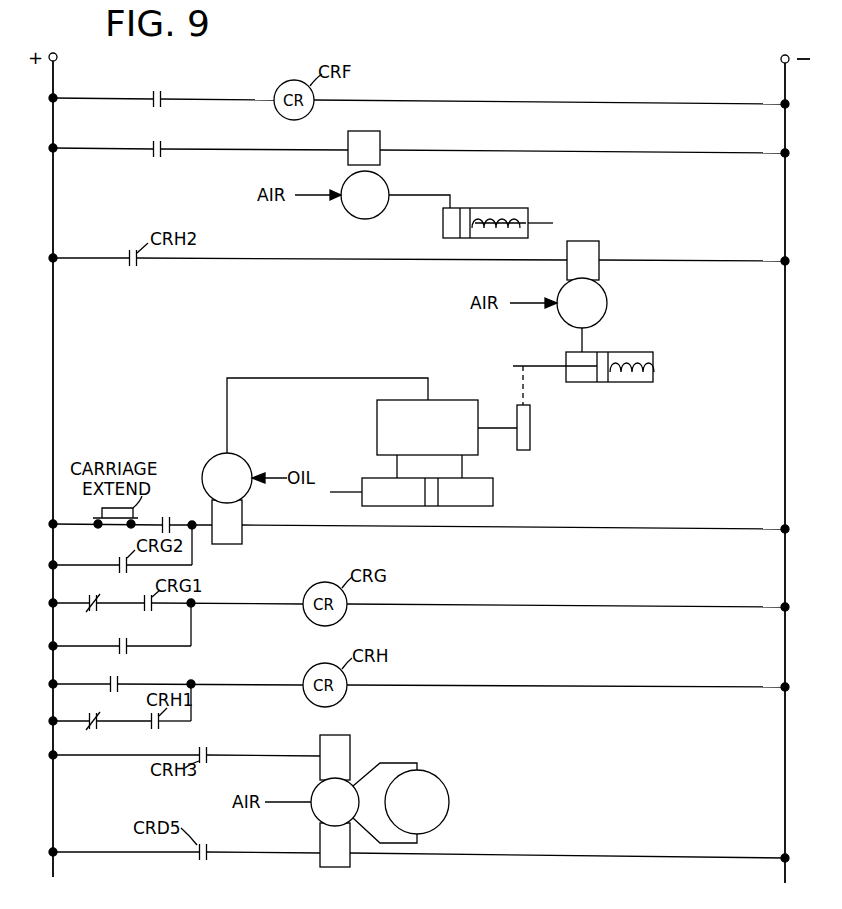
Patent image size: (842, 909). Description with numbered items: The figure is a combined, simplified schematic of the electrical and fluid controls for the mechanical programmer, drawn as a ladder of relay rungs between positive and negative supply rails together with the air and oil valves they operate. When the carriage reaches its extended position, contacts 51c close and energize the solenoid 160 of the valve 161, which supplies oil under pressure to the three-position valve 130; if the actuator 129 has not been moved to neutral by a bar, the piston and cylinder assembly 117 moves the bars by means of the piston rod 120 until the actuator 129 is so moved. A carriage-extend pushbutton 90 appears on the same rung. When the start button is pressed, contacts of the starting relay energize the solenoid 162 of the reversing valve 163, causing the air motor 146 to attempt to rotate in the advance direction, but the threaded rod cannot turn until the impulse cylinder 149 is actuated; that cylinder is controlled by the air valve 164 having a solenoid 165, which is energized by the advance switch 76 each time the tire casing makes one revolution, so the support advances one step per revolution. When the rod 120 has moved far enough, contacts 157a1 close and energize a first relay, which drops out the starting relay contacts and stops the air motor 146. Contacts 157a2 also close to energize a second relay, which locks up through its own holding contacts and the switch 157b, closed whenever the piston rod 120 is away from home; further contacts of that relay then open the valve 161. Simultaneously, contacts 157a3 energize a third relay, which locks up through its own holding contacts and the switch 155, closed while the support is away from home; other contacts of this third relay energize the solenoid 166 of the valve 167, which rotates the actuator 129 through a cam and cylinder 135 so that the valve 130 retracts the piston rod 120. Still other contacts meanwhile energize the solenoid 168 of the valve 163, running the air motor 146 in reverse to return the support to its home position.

The contacts 157a1 is at (150, 92).
The advance switch 76 is at (162, 143).
The solenoid 165 is at (380, 135).
The air valve 164 is at (387, 180).
The impulse cylinder 149 is at (510, 208).
The solenoid 166 is at (599, 246).
The valve 167 is at (605, 292).
The air cylinder 135 is at (625, 352).
The actuator 129 is at (530, 422).
The three-position valve 130 is at (377, 404).
The piston and cylinder assembly 117 is at (493, 492).
The piston rod 120 is at (341, 492).
The valve 161 is at (210, 460).
The solenoid 160 is at (242, 538).
The carriage extend pushbutton 90 is at (92, 511).
The contacts 51c is at (170, 518).
The switch 157b is at (88, 598).
The contacts 157a2 is at (140, 630).
The contacts 157a3 is at (118, 678).
The switch 155 is at (88, 716).
The solenoid 168 is at (350, 738).
The reversing valve 163 is at (315, 787).
The air motor 146 is at (445, 785).
The solenoid 162 is at (350, 866).